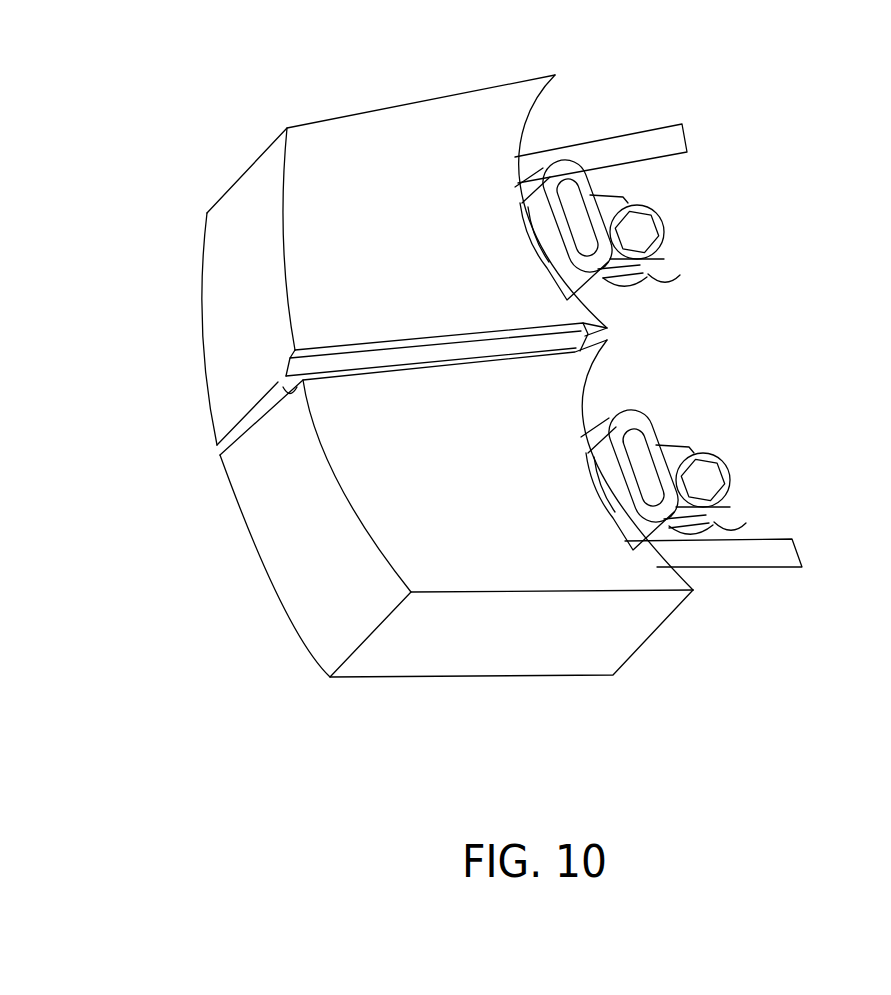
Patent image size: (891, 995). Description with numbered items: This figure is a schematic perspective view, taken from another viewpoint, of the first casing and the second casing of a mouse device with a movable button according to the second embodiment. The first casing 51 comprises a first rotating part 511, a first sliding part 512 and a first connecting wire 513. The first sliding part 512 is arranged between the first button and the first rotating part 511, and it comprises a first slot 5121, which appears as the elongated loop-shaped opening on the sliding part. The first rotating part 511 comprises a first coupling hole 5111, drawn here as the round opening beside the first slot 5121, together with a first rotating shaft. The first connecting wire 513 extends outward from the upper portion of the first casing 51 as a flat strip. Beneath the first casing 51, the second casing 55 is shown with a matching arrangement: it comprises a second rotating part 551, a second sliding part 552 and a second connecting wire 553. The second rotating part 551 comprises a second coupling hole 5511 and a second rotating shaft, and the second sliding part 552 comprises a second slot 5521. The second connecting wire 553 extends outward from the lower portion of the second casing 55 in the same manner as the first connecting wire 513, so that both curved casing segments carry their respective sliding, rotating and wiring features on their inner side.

The first casing 51 is at (247, 295).
The first rotating part 511 is at (627, 280).
The first coupling hole 5111 is at (635, 228).
The first sliding part 512 is at (557, 167).
The first slot 5121 is at (570, 190).
The first connecting wire 513 is at (680, 137).
The second casing 55 is at (305, 528).
The second rotating part 551 is at (697, 527).
The second coupling hole 5511 is at (702, 470).
The second sliding part 552 is at (636, 530).
The second slot 5521 is at (648, 495).
The second connecting wire 553 is at (783, 555).